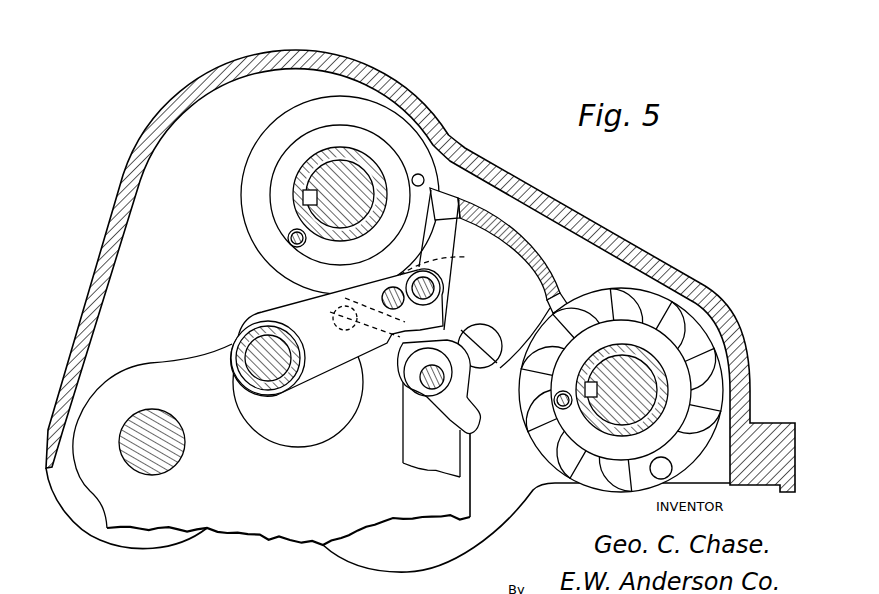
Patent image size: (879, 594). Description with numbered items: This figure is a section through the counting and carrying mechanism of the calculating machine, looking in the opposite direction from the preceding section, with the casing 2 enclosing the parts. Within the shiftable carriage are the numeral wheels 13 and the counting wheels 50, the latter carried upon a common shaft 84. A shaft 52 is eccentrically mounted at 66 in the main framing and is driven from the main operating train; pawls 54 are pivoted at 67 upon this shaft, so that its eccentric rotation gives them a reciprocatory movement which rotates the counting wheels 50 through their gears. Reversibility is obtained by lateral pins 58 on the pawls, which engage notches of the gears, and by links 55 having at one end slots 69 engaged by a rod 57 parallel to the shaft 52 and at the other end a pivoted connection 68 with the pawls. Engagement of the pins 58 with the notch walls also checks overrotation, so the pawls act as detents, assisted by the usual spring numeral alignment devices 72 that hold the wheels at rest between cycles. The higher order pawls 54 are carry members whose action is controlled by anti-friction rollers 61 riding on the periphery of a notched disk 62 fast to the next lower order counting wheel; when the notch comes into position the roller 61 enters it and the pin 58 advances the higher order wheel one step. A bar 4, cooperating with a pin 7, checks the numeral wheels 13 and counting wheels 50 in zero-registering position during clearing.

The casing 2 is at (126, 176).
The bar 4 is at (546, 284).
The pin 7 is at (425, 180).
The numeral wheels 13 is at (667, 312).
The counting wheels 50 is at (441, 231).
The shaft 52 is at (262, 352).
The pawls 54 is at (304, 322).
The links 55 is at (384, 350).
The rod 57 is at (426, 388).
The lateral pins 58 is at (445, 268).
The anti-friction rollers 61 is at (441, 289).
The notched disk 62 is at (279, 132).
The eccentric mounting 66 is at (297, 447).
The pivot 67 is at (236, 389).
The pivoted connection 68 is at (361, 321).
The slots 69 is at (422, 358).
The spring numeral alignment devices 72 is at (288, 239).
The common shaft 84 is at (308, 181).